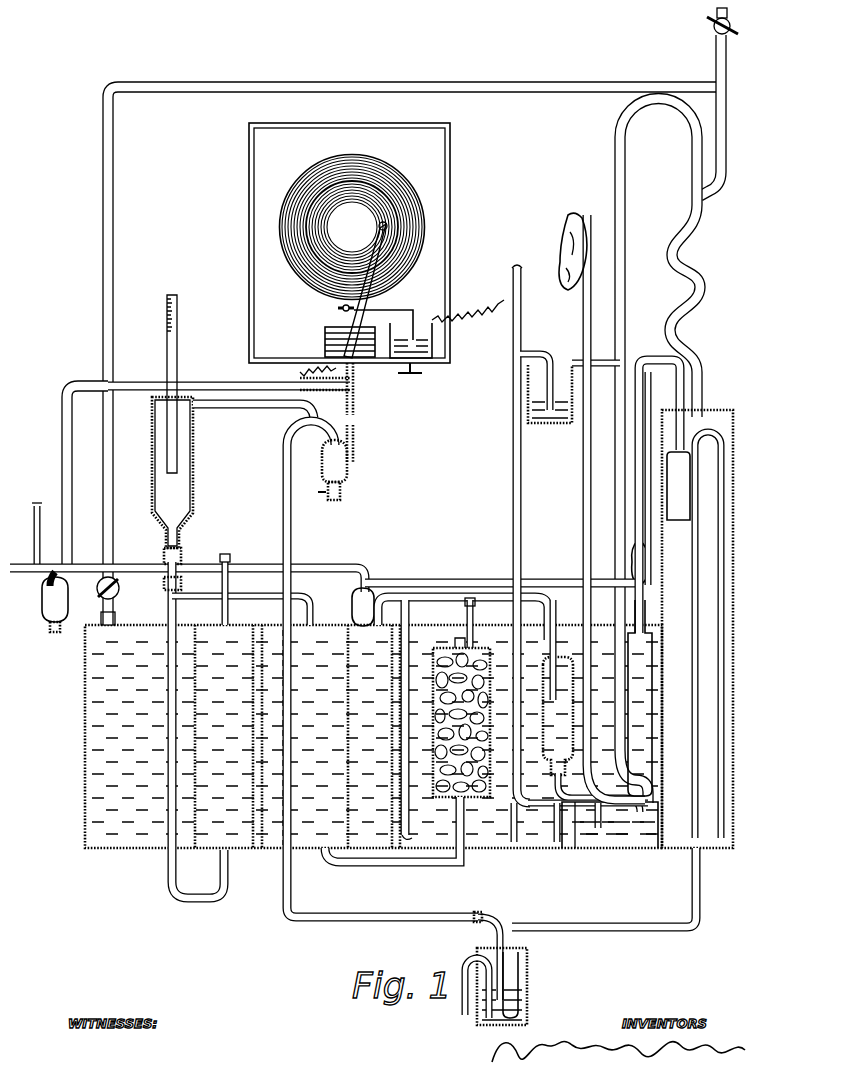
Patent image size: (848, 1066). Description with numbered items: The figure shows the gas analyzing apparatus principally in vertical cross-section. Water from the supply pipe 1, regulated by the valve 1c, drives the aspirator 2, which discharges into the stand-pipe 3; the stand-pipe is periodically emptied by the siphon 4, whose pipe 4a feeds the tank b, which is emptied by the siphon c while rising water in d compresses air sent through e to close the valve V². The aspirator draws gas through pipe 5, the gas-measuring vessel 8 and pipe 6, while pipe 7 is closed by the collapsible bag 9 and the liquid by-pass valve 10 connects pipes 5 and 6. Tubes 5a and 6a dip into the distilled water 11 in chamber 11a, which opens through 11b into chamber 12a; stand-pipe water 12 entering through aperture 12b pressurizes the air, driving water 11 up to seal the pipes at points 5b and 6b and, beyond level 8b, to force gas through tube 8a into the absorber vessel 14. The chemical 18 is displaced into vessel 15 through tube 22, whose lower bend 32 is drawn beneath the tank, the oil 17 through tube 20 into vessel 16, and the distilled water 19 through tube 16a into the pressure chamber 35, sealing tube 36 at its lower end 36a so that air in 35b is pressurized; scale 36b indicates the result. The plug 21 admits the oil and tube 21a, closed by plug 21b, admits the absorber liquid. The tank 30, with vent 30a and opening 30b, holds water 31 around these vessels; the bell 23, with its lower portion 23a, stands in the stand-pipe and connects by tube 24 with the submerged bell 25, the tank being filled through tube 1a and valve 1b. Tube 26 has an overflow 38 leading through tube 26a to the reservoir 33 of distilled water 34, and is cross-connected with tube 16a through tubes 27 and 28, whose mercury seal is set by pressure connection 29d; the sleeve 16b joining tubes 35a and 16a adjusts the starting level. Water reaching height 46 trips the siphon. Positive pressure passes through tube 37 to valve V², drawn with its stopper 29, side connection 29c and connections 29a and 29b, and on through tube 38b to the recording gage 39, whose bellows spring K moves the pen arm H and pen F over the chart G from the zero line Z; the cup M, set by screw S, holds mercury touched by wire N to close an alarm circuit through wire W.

The water supply pipe 1 is at (727, 68).
The tube 1a is at (116, 196).
The valve 1b is at (120, 588).
The valve 1c is at (733, 24).
The aspirator 2 is at (682, 258).
The stand-pipe 3 is at (725, 415).
The siphon 4 is at (718, 650).
The pipe of the siphon 4a is at (690, 872).
The pipe 5 is at (512, 448).
The tube 5a is at (520, 848).
The sealing point 5b is at (505, 797).
The pipe 6 is at (620, 478).
The tube 6a is at (562, 846).
The sealing point 6b is at (540, 801).
The pipe 7 is at (583, 458).
The gas-measuring vessel 8 is at (558, 716).
The tube 8a is at (550, 592).
The level point 8b is at (560, 770).
The distensible and collapsible bag 9 is at (560, 242).
The liquid by-pass valve 10 is at (556, 370).
The liquid 11 is at (545, 812).
The chamber 11a is at (493, 840).
The opening 11b is at (600, 830).
The water 12 is at (665, 828).
The chamber 12a is at (640, 846).
The aperture 12b is at (648, 830).
The absorber vessel 14 is at (468, 640).
The vessel 15 is at (290, 838).
The vessel 16 is at (168, 845).
The tube 16a is at (170, 600).
The sleeve connection 16b is at (182, 584).
The light oil 17 is at (268, 672).
The liquid chemical 18 is at (490, 742).
The distilled water 19 is at (220, 792).
The tube 20 is at (228, 580).
The plug 21 is at (176, 566).
The tube 21a is at (500, 640).
The plug 21b is at (518, 590).
The tube 22 is at (428, 868).
The bell 23 is at (688, 470).
The bottom 23a is at (690, 518).
The tube 24 is at (700, 370).
The bell 25 is at (660, 640).
The tube 26 is at (646, 380).
The tube 26a is at (455, 582).
The tube 27 is at (290, 582).
The tube 28 is at (360, 572).
The stopper 29 is at (340, 500).
The valve connection 29a is at (348, 462).
The connection 29b is at (340, 452).
The cap 29c is at (320, 494).
The pressure connection 29d is at (376, 432).
The tank 30 is at (88, 662).
The air vent 30a is at (101, 618).
The opening 30b is at (665, 638).
The water 31 is at (118, 780).
The bend 32 is at (365, 860).
The reservoir 33 is at (415, 655).
The distilled water 34 is at (400, 790).
The pressure chamber 35 is at (196, 478).
The tube 35a is at (182, 556).
The air space 35b is at (178, 428).
The tube 36 is at (175, 430).
The lower end of tube 36 36a is at (180, 480).
The scale 36b is at (178, 316).
The tube 37 is at (196, 410).
The overflow 38 is at (32, 540).
The tube 38b is at (358, 400).
The recording gage 39 is at (285, 142).
The maximum water height 46 is at (722, 440).
The chart G is at (400, 176).
The recording pen F is at (390, 222).
The neutral or zero line Z is at (386, 230).
The pen arm H is at (358, 306).
The bellows spring K is at (326, 336).
The wire N is at (416, 312).
The cup M is at (428, 342).
The wire W is at (468, 306).
The screw S is at (424, 374).
The tank b is at (528, 965).
The siphon c is at (460, 982).
The air vessel d is at (520, 992).
The tube e is at (462, 924).